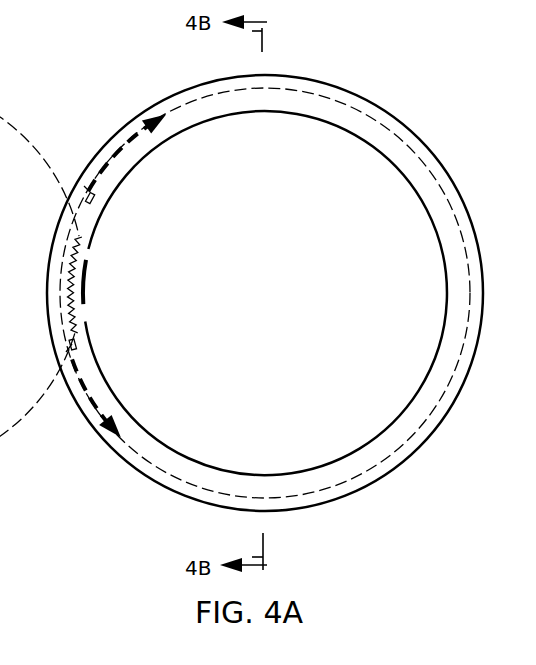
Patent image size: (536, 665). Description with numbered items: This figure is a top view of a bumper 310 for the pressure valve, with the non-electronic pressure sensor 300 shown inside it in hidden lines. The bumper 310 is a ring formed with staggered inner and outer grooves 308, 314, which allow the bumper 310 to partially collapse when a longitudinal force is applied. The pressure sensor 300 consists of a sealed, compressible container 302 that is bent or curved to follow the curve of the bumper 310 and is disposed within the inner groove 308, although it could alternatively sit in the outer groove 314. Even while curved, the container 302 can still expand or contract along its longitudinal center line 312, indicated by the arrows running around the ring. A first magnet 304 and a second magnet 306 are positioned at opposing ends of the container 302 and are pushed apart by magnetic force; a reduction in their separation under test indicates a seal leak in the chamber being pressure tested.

The non-electronic pressure sensor 300 is at (80, 251).
The sealed, compressible container 302 is at (72, 309).
The first magnet 304 is at (90, 193).
The second magnet 306 is at (66, 357).
The inner groove 308 is at (302, 485).
The bumper 310 is at (352, 92).
The longitudinal center line 312 is at (132, 135).
The outer groove 314 is at (323, 491).